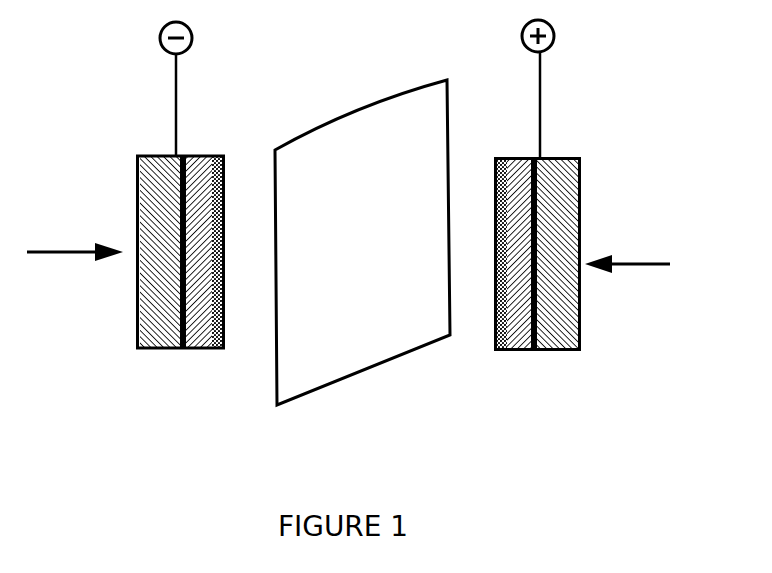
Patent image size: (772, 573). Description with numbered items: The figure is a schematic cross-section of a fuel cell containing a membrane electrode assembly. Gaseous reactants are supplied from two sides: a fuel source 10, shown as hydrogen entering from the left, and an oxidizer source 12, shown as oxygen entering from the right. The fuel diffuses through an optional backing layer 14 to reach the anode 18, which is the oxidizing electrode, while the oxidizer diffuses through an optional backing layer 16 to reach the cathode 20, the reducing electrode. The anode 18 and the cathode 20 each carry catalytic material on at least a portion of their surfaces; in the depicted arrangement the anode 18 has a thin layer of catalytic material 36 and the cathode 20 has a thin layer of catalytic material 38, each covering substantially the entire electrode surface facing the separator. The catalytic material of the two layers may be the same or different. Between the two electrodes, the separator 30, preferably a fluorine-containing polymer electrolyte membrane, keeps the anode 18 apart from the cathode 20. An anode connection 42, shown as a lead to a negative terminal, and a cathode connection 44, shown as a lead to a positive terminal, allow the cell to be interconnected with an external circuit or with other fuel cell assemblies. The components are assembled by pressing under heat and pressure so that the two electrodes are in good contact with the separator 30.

The fuel source 10 is at (77, 251).
The oxidizer source 12 is at (628, 258).
The backing layer 14 is at (175, 257).
The backing layer 16 is at (547, 258).
The anode 18 is at (200, 350).
The cathode 20 is at (518, 352).
The separator 30 is at (299, 370).
The catalytic material layer 36 is at (226, 188).
The catalytic material layer 38 is at (495, 190).
The anode connection 42 is at (173, 78).
The cathode connection 44 is at (543, 80).